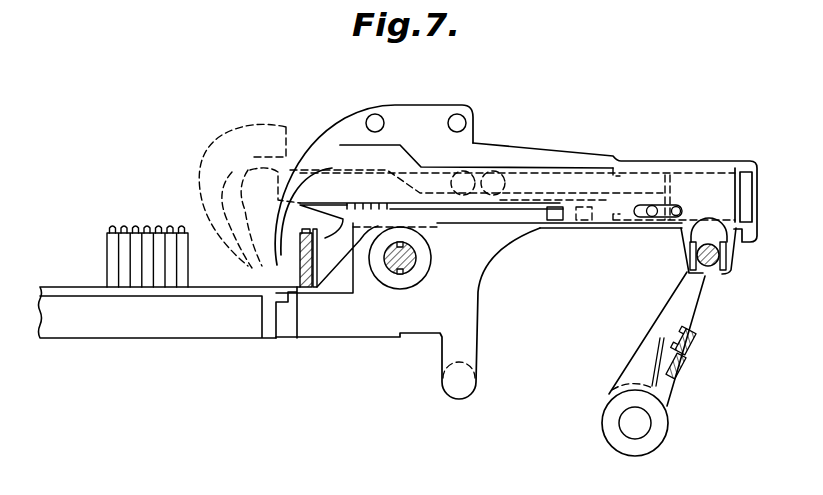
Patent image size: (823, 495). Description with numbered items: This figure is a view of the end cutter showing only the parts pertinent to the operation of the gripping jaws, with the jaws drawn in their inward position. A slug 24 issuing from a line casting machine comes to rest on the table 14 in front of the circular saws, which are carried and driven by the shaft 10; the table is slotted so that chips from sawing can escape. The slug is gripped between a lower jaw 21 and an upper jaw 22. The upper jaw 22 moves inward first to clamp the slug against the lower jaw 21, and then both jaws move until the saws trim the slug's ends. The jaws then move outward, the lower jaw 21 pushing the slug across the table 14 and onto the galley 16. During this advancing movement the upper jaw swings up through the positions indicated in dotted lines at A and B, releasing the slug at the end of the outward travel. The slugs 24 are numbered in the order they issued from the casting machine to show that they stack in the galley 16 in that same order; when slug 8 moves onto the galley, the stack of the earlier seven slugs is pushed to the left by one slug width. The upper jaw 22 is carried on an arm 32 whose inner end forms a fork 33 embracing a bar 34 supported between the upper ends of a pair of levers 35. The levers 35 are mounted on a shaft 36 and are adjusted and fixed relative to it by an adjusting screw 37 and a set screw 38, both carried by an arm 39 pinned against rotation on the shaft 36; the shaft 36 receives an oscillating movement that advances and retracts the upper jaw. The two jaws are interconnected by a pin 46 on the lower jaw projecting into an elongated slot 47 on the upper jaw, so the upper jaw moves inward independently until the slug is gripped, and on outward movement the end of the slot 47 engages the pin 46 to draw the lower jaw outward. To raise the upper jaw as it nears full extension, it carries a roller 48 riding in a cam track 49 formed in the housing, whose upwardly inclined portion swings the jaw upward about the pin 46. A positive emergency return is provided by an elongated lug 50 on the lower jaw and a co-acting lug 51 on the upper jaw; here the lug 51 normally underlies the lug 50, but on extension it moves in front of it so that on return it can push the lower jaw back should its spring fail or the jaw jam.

The slug 8 is at (308, 242).
The shaft 10 is at (416, 262).
The table 14 is at (280, 295).
The galley 16 is at (91, 287).
The lower jaw 21 is at (352, 287).
The upper jaw 22 is at (299, 258).
The slug 24 is at (158, 226).
The arm 32 is at (533, 170).
The fork 33 is at (689, 266).
The bar 34 is at (712, 273).
The levers 35 is at (648, 342).
The shaft 36 is at (639, 424).
The adjusting screw 37 is at (687, 366).
The set screw 38 is at (698, 349).
The arm 39 is at (666, 382).
The pin 46 is at (650, 208).
The elongated slot 47 is at (677, 209).
The roller 48 is at (476, 180).
The cam track 49 is at (345, 149).
The lug 50 is at (554, 220).
The lug 51 is at (576, 222).
The dotted-line position A is at (248, 187).
The dotted-line position B is at (224, 132).